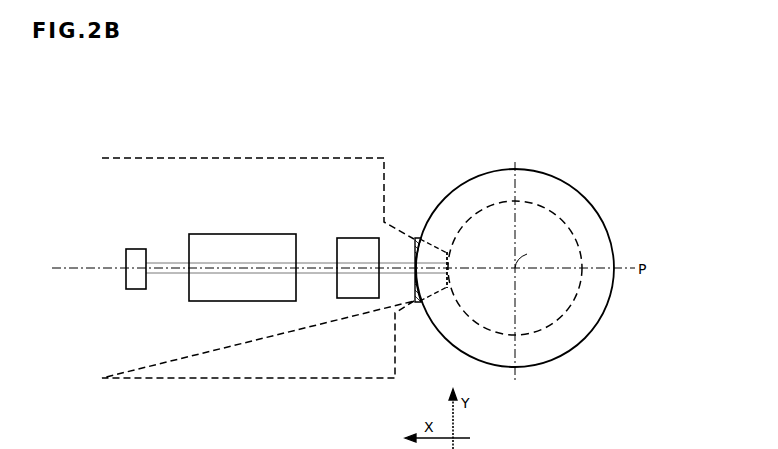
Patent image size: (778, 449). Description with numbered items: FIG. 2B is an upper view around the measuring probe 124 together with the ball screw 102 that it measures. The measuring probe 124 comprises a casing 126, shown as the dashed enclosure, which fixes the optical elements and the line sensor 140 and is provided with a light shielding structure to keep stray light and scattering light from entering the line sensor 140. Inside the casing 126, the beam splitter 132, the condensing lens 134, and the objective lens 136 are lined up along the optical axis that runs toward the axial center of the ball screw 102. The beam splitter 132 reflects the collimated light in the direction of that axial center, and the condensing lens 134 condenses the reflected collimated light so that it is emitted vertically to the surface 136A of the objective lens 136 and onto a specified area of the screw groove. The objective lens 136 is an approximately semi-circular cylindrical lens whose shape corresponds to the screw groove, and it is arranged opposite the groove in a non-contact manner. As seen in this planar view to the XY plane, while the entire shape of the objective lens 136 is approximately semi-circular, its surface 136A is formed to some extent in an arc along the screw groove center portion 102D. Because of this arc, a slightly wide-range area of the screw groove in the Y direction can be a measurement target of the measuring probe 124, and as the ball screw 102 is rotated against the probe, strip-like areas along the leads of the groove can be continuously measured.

The measuring probe 124 is at (172, 137).
The casing 126 is at (270, 158).
The line sensor 140 is at (132, 256).
The beam splitter 132 is at (256, 246).
The condensing lens 134 is at (345, 248).
The objective lens 136 is at (418, 246).
The surface of the objective lens 136A is at (475, 289).
The ball screw 102 is at (540, 171).
The screw groove center portion 102D is at (507, 204).